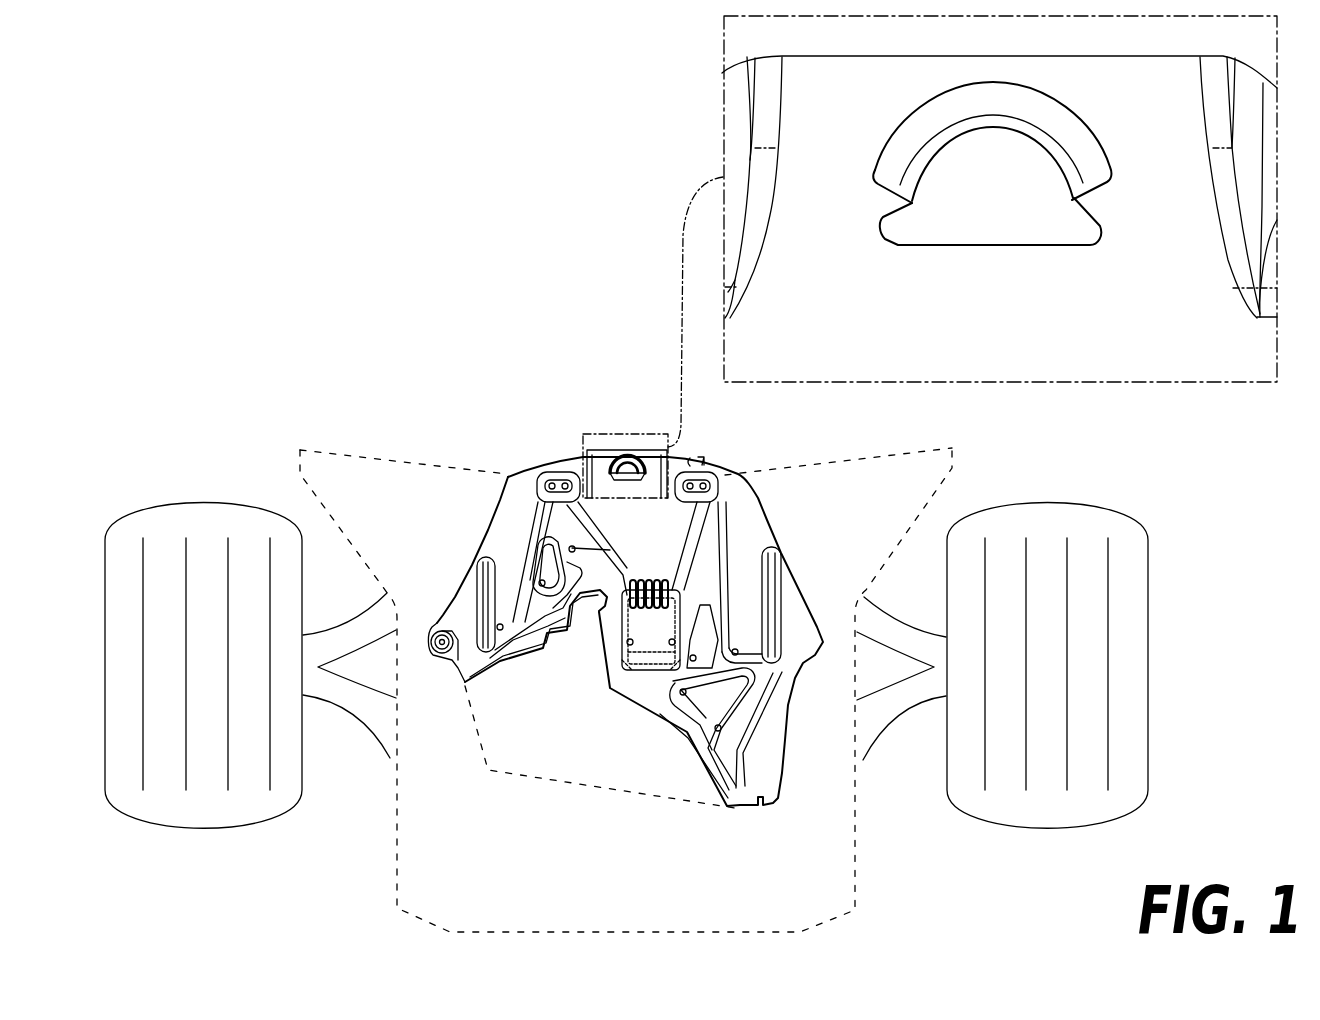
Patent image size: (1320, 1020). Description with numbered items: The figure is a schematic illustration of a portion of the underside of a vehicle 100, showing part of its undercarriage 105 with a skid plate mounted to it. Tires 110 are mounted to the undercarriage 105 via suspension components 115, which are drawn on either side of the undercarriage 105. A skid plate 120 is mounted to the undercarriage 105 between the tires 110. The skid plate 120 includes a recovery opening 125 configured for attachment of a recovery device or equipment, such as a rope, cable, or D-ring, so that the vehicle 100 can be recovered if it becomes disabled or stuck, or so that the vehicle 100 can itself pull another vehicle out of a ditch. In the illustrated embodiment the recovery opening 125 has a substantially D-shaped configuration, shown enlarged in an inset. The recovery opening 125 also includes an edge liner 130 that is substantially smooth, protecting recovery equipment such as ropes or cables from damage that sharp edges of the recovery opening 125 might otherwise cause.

The vehicle 100 is at (342, 264).
The undercarriage 105 is at (368, 487).
The tires 110 is at (209, 521).
The suspension components 115 is at (368, 630).
The skid plate 120 is at (516, 482).
The recovery opening 125 is at (860, 250).
The edge liner 130 is at (1074, 139).